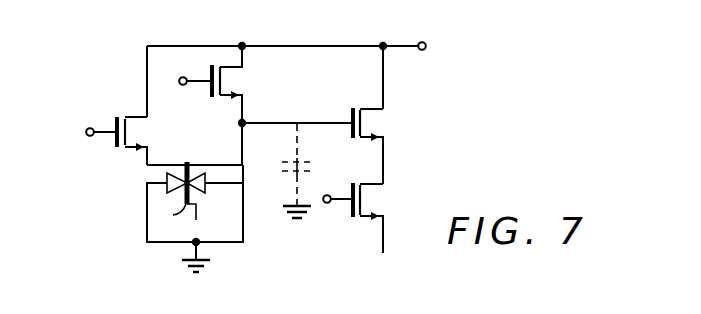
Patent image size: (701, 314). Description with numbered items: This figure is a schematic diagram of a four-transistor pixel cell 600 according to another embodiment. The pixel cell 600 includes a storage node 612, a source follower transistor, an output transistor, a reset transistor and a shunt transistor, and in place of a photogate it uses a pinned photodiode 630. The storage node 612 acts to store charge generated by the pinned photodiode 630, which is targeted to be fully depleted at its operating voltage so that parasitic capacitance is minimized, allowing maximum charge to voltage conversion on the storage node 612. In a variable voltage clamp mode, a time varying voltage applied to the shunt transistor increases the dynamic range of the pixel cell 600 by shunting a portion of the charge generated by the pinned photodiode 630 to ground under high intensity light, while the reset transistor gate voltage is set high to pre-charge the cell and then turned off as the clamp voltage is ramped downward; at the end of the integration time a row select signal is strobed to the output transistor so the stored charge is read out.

The 4T pixel cell 600 is at (474, 92).
The storage node 612 is at (298, 121).
The pinned photodiode 630 is at (195, 217).